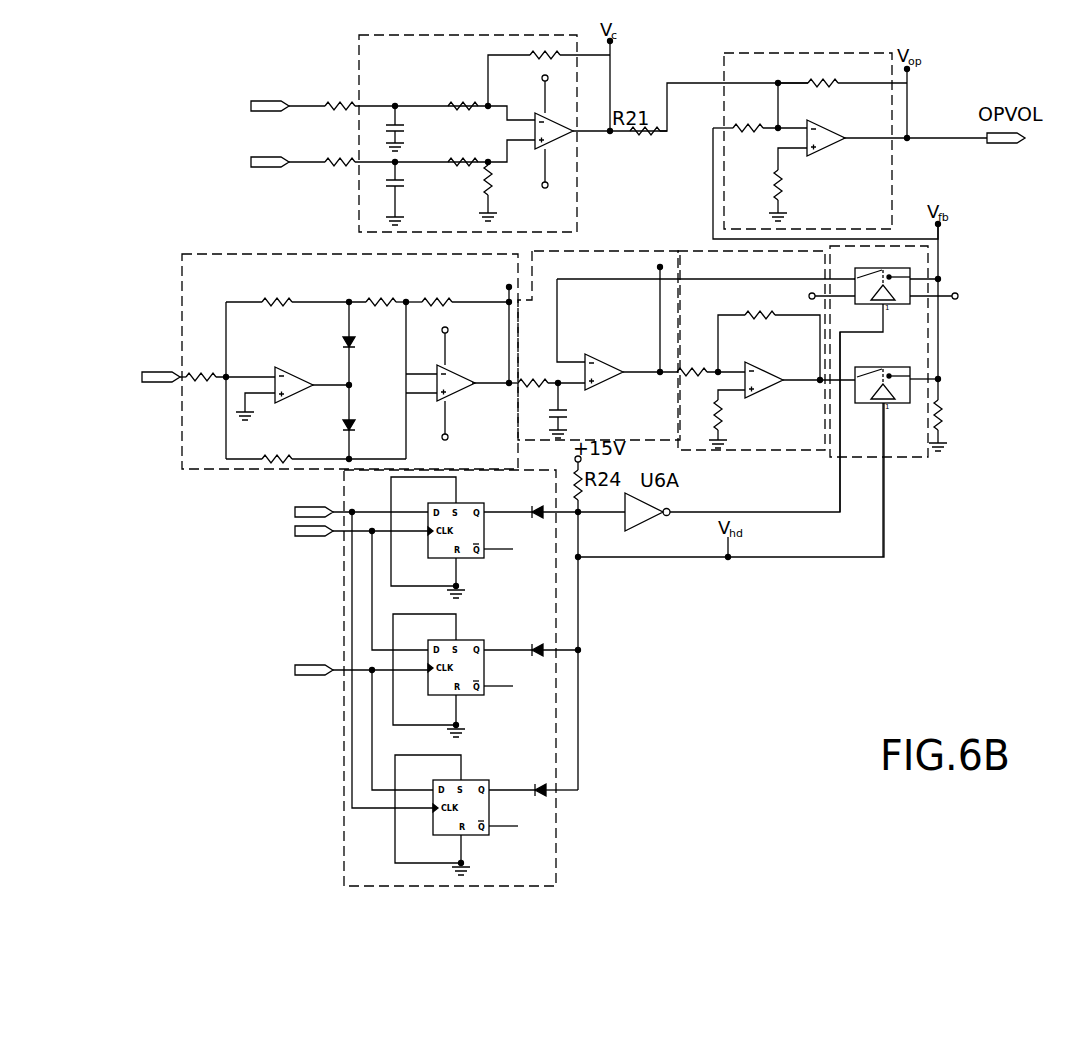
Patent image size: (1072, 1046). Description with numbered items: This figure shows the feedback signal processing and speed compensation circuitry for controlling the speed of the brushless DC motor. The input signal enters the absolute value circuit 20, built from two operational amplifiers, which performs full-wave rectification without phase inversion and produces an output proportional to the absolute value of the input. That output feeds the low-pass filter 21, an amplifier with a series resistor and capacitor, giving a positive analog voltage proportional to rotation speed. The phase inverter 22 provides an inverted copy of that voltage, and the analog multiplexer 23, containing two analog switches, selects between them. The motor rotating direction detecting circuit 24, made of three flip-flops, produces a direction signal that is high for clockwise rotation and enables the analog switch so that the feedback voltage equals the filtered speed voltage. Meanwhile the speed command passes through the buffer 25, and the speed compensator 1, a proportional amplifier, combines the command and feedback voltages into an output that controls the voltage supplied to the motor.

The speed compensator 1 is at (724, 57).
The absolute value circuit 20 is at (225, 254).
The low-pass filter 21 is at (590, 251).
The phase inverter 22 is at (680, 251).
The analog multiplexer 23 is at (912, 458).
The motor rotating direction detecting circuit 24 is at (556, 827).
The buffer 25 is at (359, 57).